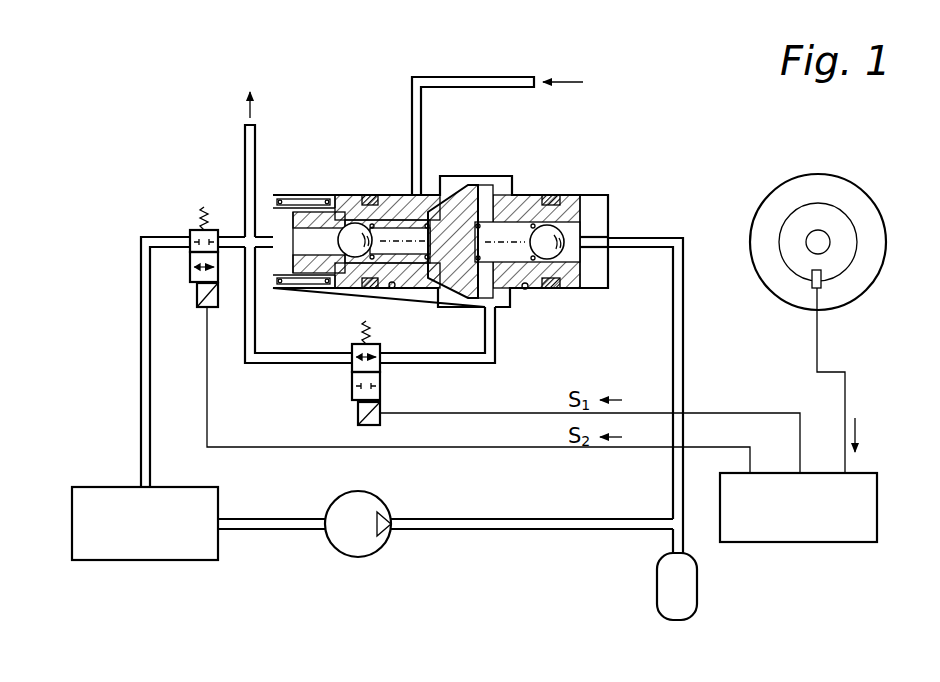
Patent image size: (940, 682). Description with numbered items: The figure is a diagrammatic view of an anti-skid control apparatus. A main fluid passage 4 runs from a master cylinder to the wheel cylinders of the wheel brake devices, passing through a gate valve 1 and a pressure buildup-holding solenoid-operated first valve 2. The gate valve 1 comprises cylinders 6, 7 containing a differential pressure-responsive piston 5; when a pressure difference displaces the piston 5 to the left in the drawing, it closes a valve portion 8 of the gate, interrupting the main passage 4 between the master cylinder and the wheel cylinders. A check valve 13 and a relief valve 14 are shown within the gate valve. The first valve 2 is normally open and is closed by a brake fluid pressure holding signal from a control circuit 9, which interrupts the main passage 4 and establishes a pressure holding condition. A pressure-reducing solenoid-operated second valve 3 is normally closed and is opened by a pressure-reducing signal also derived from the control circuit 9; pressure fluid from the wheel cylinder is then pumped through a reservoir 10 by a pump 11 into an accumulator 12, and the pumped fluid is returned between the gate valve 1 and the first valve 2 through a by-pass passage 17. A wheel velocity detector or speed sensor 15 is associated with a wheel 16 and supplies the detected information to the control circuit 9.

The gate valve 1 is at (482, 175).
The first valve 2 is at (352, 385).
The second valve 3 is at (186, 232).
The main fluid passage 4 is at (477, 77).
The differential pressure-responsive piston 5 is at (530, 195).
The cylinder 6 is at (528, 291).
The cylinder 7 is at (397, 290).
The valve portion 8 is at (451, 190).
The control circuit 9 is at (813, 542).
The reservoir 10 is at (220, 500).
The pump 11 is at (384, 500).
The accumulator 12 is at (656, 586).
The check valve 13 is at (570, 245).
The relief valve 14 is at (353, 220).
The speed sensor 15 is at (823, 283).
The wheel 16 is at (880, 221).
The by-pass passage 17 is at (152, 380).